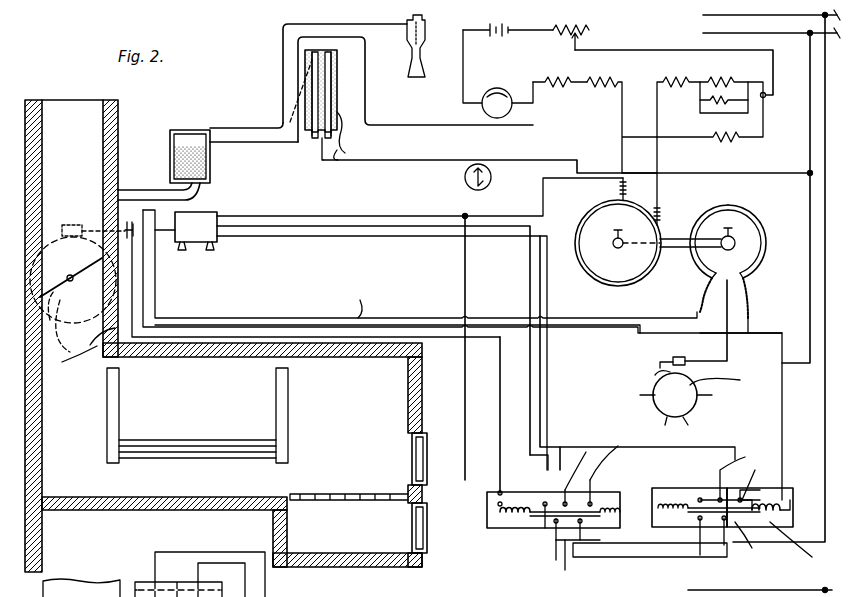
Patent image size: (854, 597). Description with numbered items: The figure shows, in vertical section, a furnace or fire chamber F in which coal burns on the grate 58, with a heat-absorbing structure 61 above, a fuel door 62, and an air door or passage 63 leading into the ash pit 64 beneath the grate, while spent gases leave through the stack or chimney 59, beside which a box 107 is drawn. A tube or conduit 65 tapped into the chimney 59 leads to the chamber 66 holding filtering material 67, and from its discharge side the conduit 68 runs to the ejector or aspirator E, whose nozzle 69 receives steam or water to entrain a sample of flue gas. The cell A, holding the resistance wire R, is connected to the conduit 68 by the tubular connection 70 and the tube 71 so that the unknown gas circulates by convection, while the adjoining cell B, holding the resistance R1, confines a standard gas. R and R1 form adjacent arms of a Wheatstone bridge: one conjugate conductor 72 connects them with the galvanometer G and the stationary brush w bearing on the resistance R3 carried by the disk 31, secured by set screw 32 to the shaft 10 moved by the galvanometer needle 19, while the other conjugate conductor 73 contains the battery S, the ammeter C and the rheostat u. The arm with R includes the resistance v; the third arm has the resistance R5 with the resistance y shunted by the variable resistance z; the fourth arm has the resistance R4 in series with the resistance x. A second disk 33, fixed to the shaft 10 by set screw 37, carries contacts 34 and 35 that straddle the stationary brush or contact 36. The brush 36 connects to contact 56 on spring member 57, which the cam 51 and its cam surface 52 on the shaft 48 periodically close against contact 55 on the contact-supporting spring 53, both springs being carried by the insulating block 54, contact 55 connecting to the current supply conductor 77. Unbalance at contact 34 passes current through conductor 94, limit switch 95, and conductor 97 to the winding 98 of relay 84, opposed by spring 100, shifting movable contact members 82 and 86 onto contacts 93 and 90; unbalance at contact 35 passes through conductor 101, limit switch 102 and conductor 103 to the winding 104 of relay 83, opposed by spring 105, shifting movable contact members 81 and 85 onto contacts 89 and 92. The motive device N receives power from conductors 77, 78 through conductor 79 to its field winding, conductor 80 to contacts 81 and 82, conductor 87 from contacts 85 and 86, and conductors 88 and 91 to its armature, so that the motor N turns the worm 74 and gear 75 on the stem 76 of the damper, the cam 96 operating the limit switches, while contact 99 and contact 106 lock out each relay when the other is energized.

The stack or chimney 59 is at (118, 127).
The tube or conduit 65 is at (132, 183).
The chamber 66 is at (210, 170).
The filtering material 67 is at (190, 150).
The tube or conduit 68 is at (247, 128).
The nozzle 69 is at (423, 17).
The tubular connection 70 is at (313, 140).
The tube 71 is at (300, 72).
The conjugate conductor 72 is at (360, 162).
The conjugate conductor 73 is at (463, 75).
The worm 74 is at (72, 224).
The gear 75 is at (73, 364).
The stem or shaft 76 is at (70, 276).
The current supply conductor 77 is at (708, 33).
The current supply conductor 78 is at (742, 17).
The conductor 79 is at (240, 215).
The conductor 80 is at (262, 226).
The movable contact member 81 is at (580, 525).
The movable contact member 82 is at (751, 544).
The relay 83 is at (494, 530).
The relay 84 is at (793, 515).
The movable contact 85 is at (545, 540).
The movable contact 86 is at (724, 548).
The conductor 87 is at (822, 397).
The conductor 88 is at (245, 238).
The contact 89 is at (608, 455).
The contact 90 is at (740, 471).
The conductor 91 is at (280, 238).
The contact 92 is at (525, 483).
The contact 93 is at (758, 487).
The conductor 94 is at (145, 288).
The limit switch 95 is at (125, 225).
The cam 96 is at (135, 318).
The conductor 97 is at (156, 268).
The winding 98 is at (800, 546).
The contact 99 is at (581, 463).
The spring 100 is at (660, 520).
The conductor 101 is at (660, 318).
The limit switch 102 is at (96, 345).
The conductor 103 is at (500, 394).
The winding 104 is at (498, 515).
The spring 105 is at (608, 508).
The contact 106 is at (695, 509).
The box 107 is at (85, 582).
The shaft 10 is at (678, 238).
The galvanometer needle 19 is at (491, 178).
The disk 31 is at (611, 275).
The set screw 32 is at (613, 229).
The disk 33 is at (755, 215).
The contact 34 is at (768, 250).
The contact 35 is at (700, 268).
The stationary brush or contact 36 is at (703, 297).
The set screw 37 is at (721, 229).
The shaft 48 is at (697, 403).
The cam 51 is at (660, 420).
The cam member or surface 52 is at (688, 428).
The contact-supporting spring 53 is at (679, 393).
The insulating block 54 is at (722, 386).
The contact 55 is at (660, 372).
The contact 56 is at (699, 322).
The spring member 57 is at (660, 360).
The grate 58 is at (356, 494).
The heat-absorbing structure 61 is at (270, 416).
The door 62 is at (427, 460).
The door or passage 63 is at (427, 528).
The chamber or ash pit 64 is at (372, 548).
The chamber or cell A is at (300, 110).
The cell or chamber B is at (344, 136).
The resistance wire or conductor R is at (314, 86).
The resistance conductor R1 is at (332, 90).
The resistance conductor R3 is at (582, 265).
The resistance R4 is at (605, 90).
The resistance R5 is at (675, 90).
The ammeter C is at (510, 86).
The ejector or aspirator E is at (428, 45).
The furnace or fire chamber F is at (395, 410).
The galvanometer G is at (468, 177).
The motive device N is at (186, 231).
The source of current or battery S is at (502, 37).
The adjustable resistance or rheostat u is at (606, 590).
The resistance v is at (725, 140).
The stationary brush or contact w is at (618, 192).
The resistance x is at (560, 90).
The resistance y is at (724, 78).
The variable resistance z is at (730, 103).